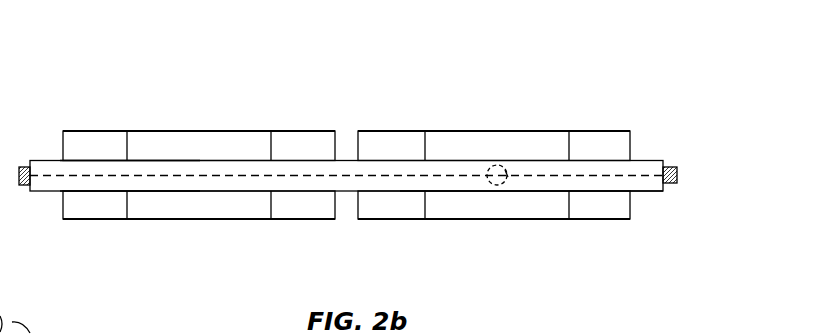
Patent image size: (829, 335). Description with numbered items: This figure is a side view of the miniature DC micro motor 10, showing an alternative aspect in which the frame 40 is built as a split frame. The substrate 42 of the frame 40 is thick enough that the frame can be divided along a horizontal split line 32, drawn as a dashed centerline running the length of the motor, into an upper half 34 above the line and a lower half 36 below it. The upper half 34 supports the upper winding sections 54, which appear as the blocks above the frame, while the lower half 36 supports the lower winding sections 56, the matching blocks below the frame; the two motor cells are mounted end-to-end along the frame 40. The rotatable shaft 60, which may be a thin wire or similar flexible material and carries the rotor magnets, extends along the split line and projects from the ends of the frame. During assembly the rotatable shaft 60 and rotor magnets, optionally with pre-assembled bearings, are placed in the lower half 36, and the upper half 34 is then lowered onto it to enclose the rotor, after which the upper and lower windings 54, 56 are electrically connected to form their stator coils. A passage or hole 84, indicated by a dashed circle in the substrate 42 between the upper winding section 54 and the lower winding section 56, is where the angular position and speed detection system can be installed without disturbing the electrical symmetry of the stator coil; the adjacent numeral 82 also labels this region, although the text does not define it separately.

The miniature DC micro motor 10 is at (660, 70).
The horizontal split line 32 is at (302, 176).
The upper half 34 is at (100, 168).
The lower half 36 is at (158, 182).
The frame 40 is at (648, 160).
The substrate 42 is at (646, 191).
The upper winding sections 54 is at (218, 131).
The lower winding sections 56 is at (213, 219).
The rotatable shaft 60 is at (677, 177).
The defect region 82 is at (490, 165).
The passage or hole 84 is at (508, 177).